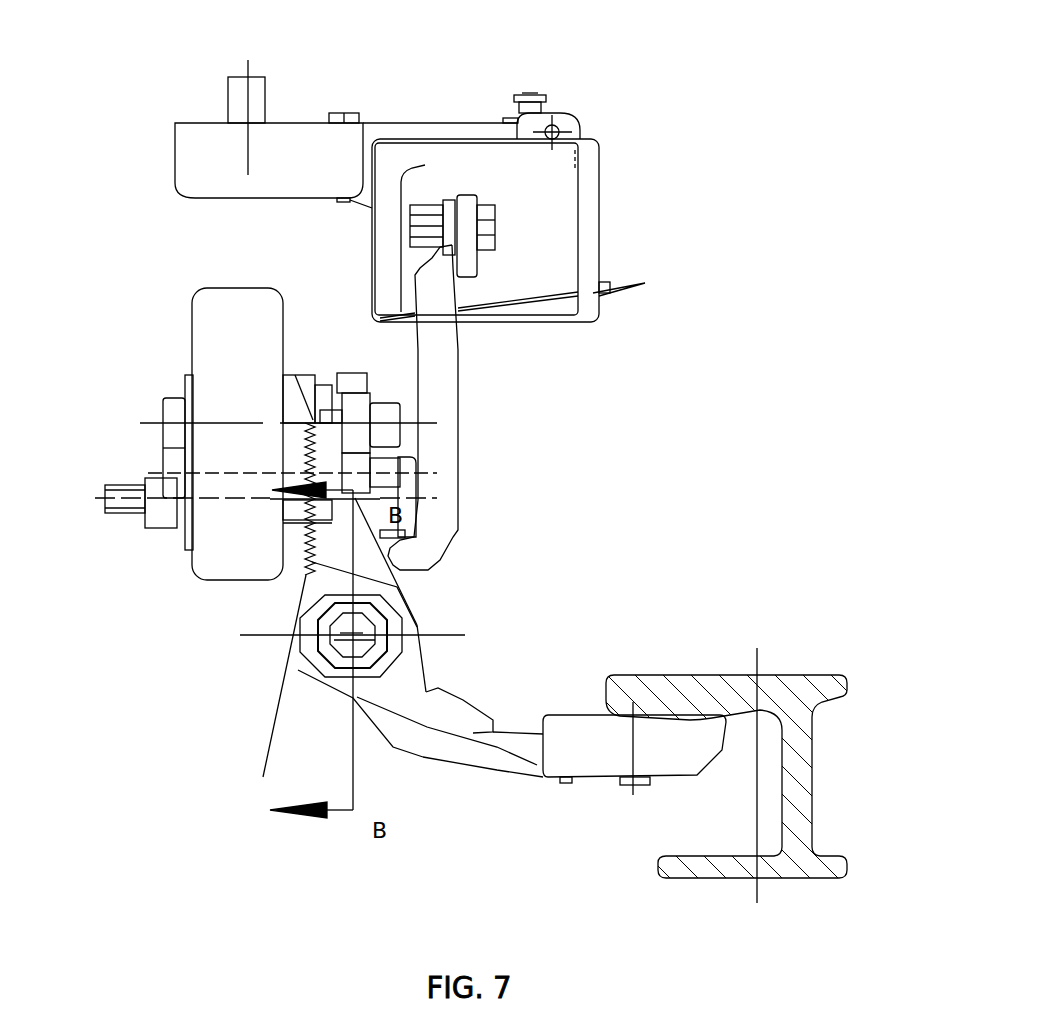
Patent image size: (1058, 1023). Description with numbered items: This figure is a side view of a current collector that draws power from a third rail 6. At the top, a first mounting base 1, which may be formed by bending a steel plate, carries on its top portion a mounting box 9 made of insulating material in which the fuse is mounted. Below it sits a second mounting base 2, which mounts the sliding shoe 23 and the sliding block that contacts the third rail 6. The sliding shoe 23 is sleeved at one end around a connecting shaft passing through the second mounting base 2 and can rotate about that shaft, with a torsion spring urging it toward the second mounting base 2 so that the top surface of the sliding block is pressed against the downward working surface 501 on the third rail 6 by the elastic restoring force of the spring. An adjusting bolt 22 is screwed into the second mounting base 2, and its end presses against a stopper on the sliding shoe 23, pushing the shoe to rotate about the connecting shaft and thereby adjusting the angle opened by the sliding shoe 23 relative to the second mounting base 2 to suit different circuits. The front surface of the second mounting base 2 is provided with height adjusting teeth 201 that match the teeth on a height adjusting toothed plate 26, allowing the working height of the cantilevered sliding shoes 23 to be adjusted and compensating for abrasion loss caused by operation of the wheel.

The first mounting base 1 is at (377, 110).
The mounting box 9 is at (567, 337).
The adjusting bolt 22 is at (234, 468).
The height adjusting toothed plate 26 is at (429, 460).
The second mounting base 2 is at (296, 627).
The height adjusting teeth 201 is at (262, 664).
The sliding shoe 23 is at (461, 779).
The downward working surface 501 is at (634, 675).
The third rail 6 is at (727, 723).